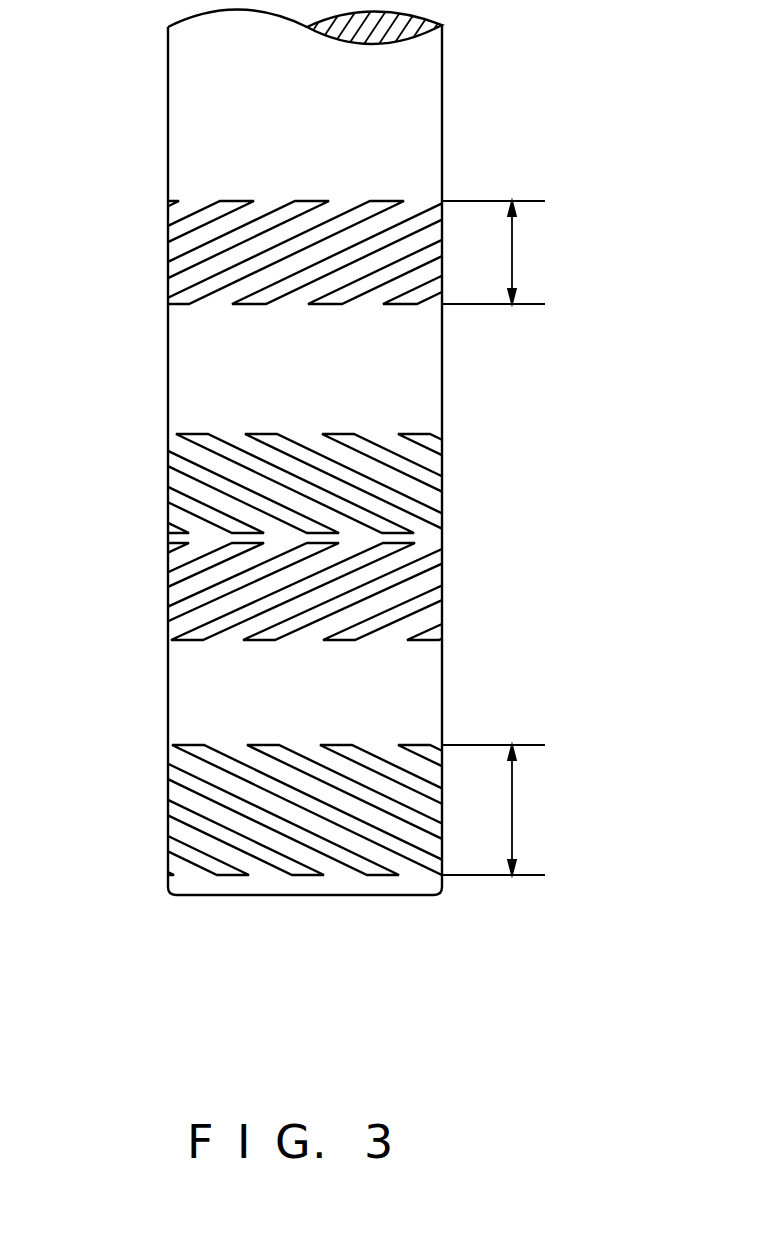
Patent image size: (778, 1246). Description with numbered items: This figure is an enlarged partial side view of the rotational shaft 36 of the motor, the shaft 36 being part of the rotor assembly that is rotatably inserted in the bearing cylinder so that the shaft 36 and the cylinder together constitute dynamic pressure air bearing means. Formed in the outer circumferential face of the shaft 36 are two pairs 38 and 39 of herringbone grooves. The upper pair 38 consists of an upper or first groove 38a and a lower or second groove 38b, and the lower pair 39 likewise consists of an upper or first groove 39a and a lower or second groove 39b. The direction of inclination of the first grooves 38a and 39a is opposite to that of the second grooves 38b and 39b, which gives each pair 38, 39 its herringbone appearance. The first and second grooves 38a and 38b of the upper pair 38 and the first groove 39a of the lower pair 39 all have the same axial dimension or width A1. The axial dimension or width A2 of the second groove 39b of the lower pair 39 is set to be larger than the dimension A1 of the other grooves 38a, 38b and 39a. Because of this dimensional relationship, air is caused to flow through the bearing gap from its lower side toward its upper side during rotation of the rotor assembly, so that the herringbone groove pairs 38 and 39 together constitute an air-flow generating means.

The rotational shaft 36 is at (433, 120).
The upper pair of herringbone grooves 38 is at (150, 195).
The first groove 38a is at (240, 201).
The second groove 38b is at (278, 436).
The lower pair of herringbone grooves 39 is at (150, 880).
The first groove 39a is at (283, 632).
The second groove 39b is at (290, 868).
The axial dimension or width A1 is at (502, 252).
The axial dimension or width A2 is at (502, 810).